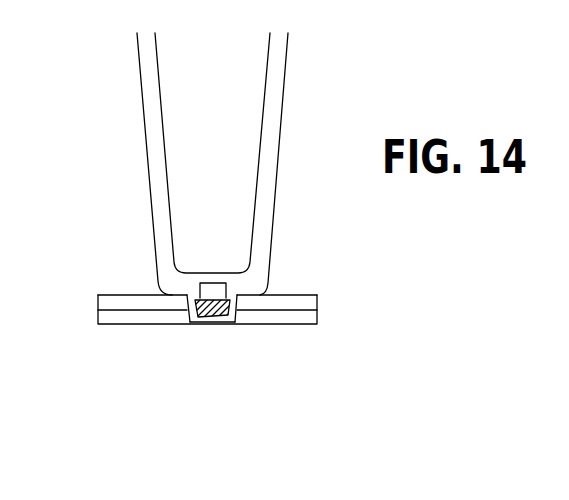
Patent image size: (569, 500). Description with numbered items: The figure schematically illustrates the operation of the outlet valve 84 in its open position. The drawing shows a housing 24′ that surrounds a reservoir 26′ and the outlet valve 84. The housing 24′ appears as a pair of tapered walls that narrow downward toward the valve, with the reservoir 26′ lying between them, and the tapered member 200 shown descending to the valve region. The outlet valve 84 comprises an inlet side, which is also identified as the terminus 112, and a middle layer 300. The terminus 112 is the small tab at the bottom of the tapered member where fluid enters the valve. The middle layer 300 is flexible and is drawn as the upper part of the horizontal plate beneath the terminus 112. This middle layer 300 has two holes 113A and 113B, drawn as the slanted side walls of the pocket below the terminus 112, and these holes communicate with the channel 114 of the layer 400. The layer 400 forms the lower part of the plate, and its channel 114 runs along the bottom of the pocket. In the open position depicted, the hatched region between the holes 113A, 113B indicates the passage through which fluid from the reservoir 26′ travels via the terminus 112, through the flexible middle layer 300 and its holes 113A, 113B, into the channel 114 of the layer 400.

The tapered post 200 is at (283, 53).
The housing 24′ is at (149, 131).
The reservoir 26′ is at (103, 92).
The middle layer 300 is at (207, 298).
The layer 400 is at (300, 325).
The terminus 112 is at (226, 286).
The hole 113A is at (188, 325).
The hole 113B is at (240, 325).
The channel 114 is at (210, 325).
The outlet valve 84 is at (190, 293).